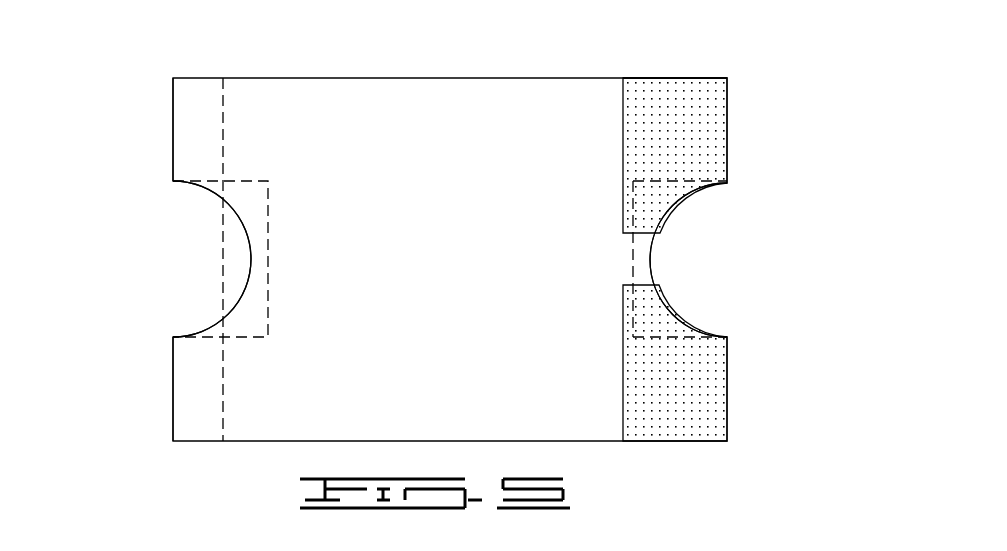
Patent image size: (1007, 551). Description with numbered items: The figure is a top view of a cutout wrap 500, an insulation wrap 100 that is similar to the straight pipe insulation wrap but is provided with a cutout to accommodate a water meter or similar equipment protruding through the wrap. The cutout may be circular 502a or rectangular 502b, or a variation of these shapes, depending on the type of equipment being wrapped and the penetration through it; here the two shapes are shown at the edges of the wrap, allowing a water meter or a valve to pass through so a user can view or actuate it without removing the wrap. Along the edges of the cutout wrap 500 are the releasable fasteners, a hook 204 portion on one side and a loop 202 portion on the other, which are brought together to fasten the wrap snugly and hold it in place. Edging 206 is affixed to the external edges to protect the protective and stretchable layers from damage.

The cutout wrap 500 is at (190, 47).
The insulation wrap 100 is at (448, 187).
The loop fastener 202 is at (693, 118).
The hook fastener 204 is at (198, 125).
The edging 206 is at (695, 78).
The circular cutout 502a is at (242, 287).
The rectangular cutout 502b is at (268, 259).